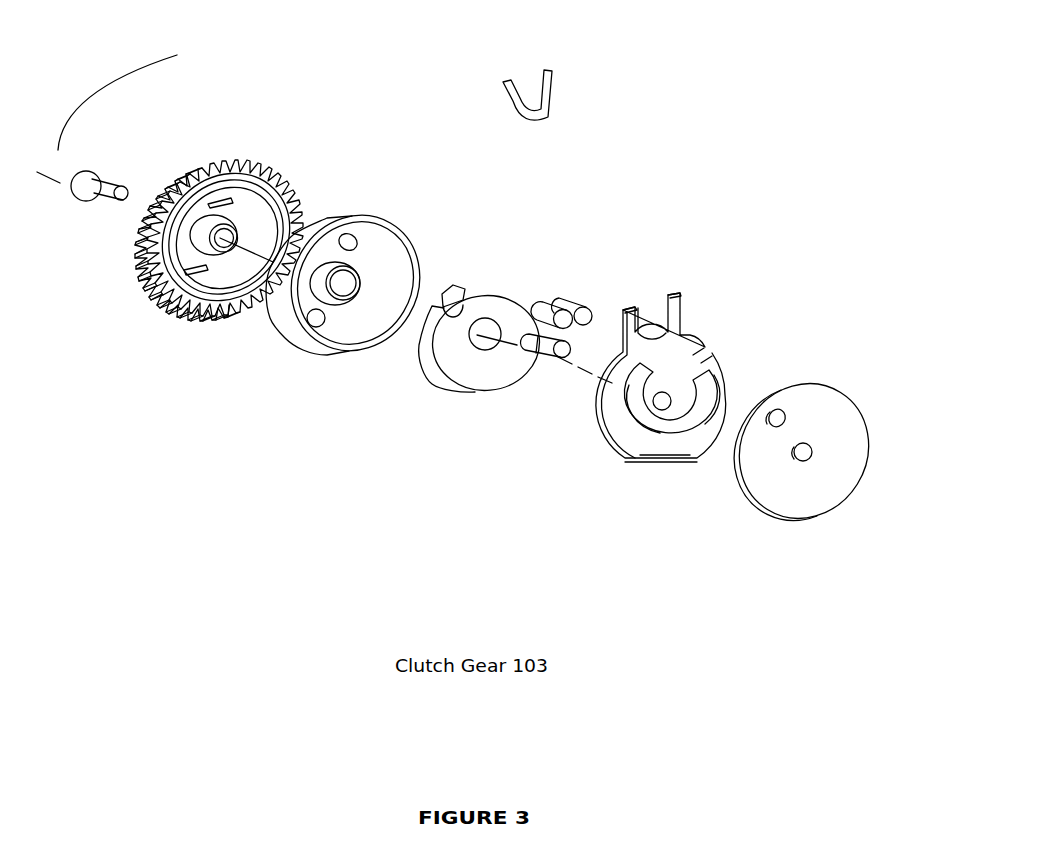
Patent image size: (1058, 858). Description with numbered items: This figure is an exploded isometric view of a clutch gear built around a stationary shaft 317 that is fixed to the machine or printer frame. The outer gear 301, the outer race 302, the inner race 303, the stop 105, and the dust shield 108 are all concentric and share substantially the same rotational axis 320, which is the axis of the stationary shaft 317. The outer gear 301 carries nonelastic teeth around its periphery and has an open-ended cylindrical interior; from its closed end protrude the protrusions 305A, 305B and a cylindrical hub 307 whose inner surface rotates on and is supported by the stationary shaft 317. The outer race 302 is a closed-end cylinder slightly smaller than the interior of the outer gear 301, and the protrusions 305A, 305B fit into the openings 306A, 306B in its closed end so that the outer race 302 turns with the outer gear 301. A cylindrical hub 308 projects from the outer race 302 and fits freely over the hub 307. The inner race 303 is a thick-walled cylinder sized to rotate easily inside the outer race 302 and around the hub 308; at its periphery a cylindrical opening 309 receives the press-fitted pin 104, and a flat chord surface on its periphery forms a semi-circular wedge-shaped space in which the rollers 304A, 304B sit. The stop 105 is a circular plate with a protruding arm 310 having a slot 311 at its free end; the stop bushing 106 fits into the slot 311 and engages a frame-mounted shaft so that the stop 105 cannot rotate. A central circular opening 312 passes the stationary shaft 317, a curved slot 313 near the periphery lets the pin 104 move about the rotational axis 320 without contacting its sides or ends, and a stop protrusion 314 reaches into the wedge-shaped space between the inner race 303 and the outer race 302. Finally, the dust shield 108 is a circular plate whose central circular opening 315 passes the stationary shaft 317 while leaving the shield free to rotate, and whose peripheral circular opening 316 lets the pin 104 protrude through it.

The pin 104 is at (540, 365).
The stop 105 is at (617, 463).
The stop bushing 106 is at (550, 75).
The dust shield 108 is at (763, 522).
The outer gear 301 is at (143, 298).
The outer race 302 is at (288, 343).
The inner race 303 is at (435, 387).
The roller 304A is at (545, 303).
The roller 304B is at (566, 301).
The protrusion 305A is at (237, 200).
The protrusion 305B is at (212, 267).
The opening 306A is at (356, 242).
The opening 306B is at (324, 317).
The hub 307 is at (197, 246).
The hub 308 is at (425, 240).
The cylindrical opening 309 is at (450, 343).
The protruding arm 310 is at (680, 354).
The slot 311 is at (652, 298).
The circular opening 312 is at (742, 428).
The curved slot 313 is at (620, 435).
The stop protrusion 314 is at (708, 345).
The circular opening 315 is at (785, 451).
The circular opening 316 is at (765, 430).
The stationary shaft 317 is at (103, 180).
The rotational axis 320 is at (142, 98).